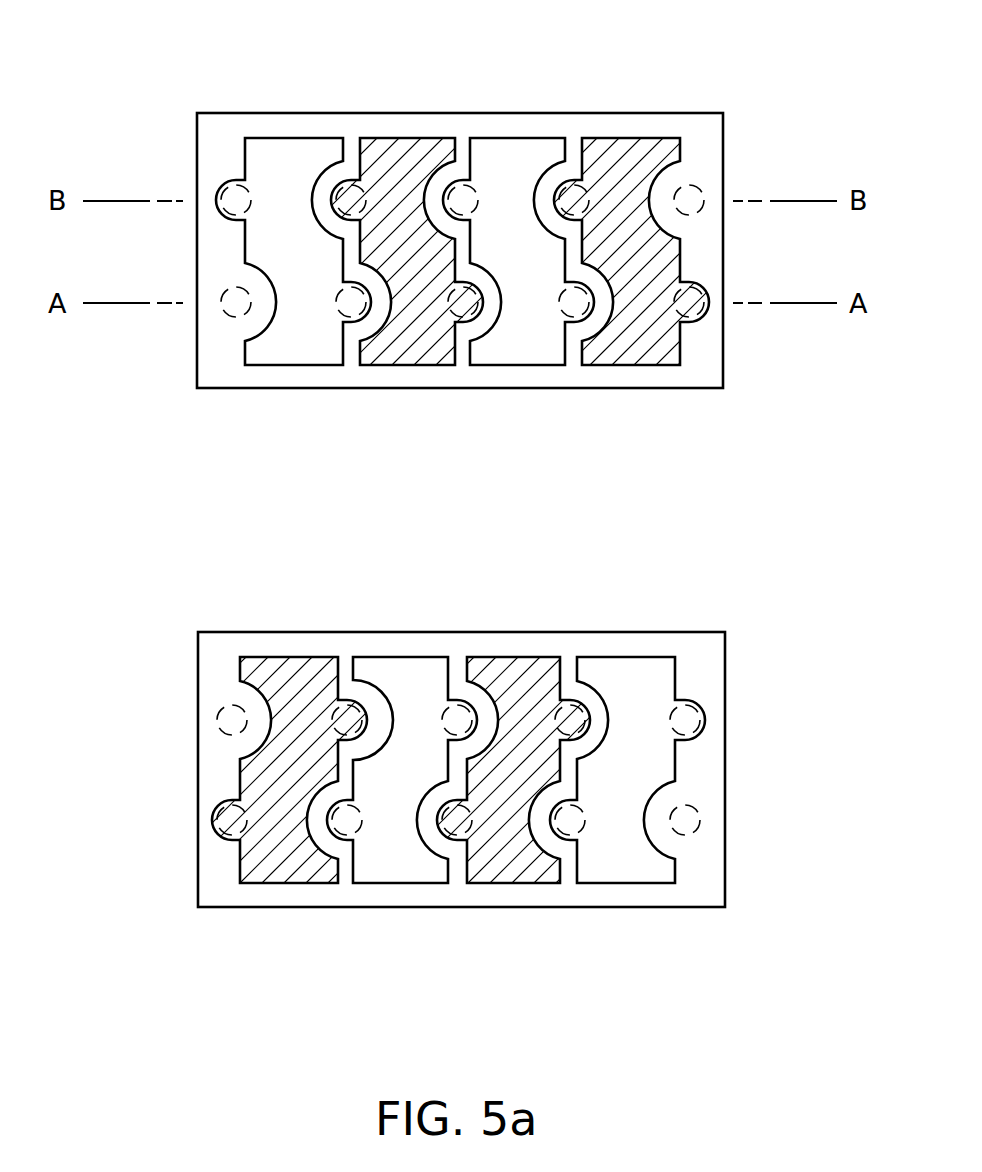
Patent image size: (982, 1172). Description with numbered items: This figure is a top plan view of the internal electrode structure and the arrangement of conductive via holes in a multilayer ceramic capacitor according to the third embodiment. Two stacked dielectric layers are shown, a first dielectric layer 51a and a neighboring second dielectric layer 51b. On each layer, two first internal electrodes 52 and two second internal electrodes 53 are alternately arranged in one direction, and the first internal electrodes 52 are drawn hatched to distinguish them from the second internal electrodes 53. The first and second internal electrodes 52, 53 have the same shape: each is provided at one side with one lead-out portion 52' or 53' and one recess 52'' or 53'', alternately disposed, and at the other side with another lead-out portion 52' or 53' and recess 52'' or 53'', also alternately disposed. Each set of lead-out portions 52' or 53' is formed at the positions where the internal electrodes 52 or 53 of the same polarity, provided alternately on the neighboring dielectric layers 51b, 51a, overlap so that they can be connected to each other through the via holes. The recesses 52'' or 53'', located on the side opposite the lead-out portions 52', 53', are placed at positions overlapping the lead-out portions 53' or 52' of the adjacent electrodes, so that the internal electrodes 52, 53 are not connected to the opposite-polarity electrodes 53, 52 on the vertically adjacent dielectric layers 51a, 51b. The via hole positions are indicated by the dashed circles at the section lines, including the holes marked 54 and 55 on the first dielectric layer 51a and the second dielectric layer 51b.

The first dielectric layer 51a is at (196, 373).
The second dielectric layer 51b is at (197, 890).
The first internal electrode 52 is at (463, 444).
The lead-out portion 52' is at (484, 387).
The recess 52'' is at (456, 626).
The second internal electrode 53 is at (460, 441).
The lead-out portion 53' is at (505, 384).
The recess 53'' is at (518, 630).
The hole on section line A 54 is at (223, 292).
The hole on section line B 55 is at (224, 186).